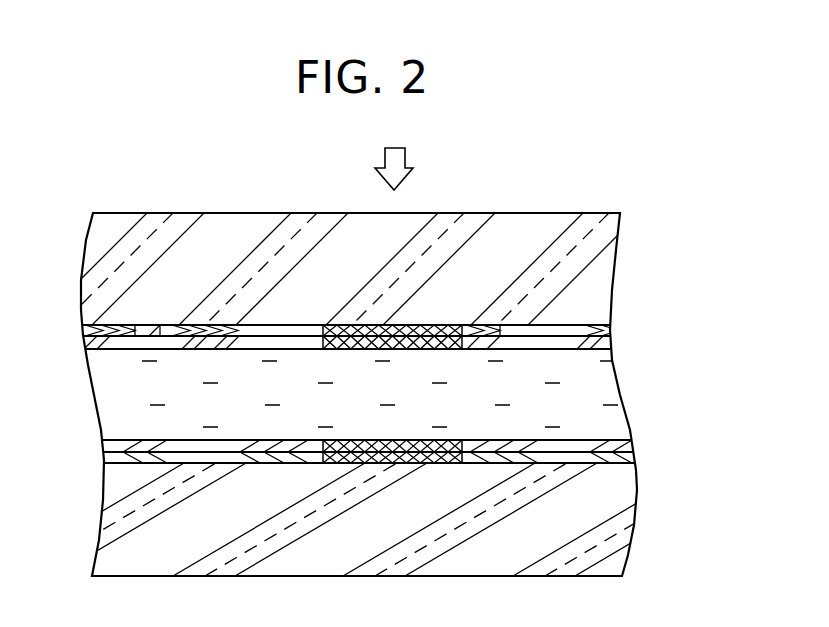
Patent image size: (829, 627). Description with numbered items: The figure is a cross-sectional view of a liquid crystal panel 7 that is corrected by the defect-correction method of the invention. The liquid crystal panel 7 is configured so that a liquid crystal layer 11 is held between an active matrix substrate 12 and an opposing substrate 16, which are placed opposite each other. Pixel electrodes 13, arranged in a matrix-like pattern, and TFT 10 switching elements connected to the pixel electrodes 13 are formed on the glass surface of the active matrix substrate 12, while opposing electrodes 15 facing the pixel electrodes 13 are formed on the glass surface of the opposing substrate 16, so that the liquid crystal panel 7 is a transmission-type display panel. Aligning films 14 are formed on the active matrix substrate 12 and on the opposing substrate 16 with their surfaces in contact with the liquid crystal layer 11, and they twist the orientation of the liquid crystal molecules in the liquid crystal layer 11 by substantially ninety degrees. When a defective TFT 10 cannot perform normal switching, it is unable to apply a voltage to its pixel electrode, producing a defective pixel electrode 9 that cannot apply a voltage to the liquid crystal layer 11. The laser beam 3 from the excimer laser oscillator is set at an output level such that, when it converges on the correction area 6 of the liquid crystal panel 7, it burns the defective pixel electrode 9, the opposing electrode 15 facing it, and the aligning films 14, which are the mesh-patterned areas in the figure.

The laser beam 3 is at (403, 157).
The correction area 6 is at (376, 206).
The liquid crystal panel 7 is at (598, 200).
The defective pixel electrode 9 is at (363, 325).
The TFT 10 is at (473, 325).
The liquid crystal layer 11 is at (621, 384).
The active matrix substrate 12 is at (604, 277).
The pixel electrodes 13 is at (613, 330).
The aligning films 14 is at (613, 345).
The opposing electrodes 15 is at (633, 458).
The opposing substrate 16 is at (624, 514).